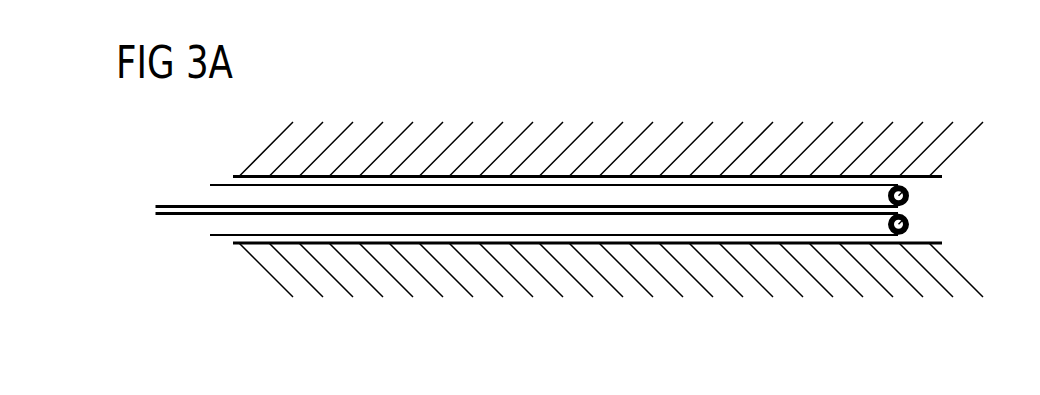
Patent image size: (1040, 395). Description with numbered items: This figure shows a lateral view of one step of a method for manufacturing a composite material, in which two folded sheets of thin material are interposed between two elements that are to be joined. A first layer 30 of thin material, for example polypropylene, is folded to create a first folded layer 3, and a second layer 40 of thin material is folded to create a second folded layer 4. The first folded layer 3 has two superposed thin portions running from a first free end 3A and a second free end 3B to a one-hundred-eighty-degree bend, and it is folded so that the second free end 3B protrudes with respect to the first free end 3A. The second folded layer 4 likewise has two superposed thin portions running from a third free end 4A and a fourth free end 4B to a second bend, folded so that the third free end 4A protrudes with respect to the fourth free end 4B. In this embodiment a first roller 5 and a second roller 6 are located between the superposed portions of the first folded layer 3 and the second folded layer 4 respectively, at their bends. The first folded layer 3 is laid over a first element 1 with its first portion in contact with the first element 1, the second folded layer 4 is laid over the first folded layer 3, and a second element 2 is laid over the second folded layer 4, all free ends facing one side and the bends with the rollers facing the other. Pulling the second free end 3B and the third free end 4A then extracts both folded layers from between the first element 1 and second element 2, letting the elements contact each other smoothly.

The first element 1 is at (915, 272).
The second element 2 is at (636, 157).
The first folded layer 3 is at (467, 262).
The first free end 3A is at (210, 235).
The second free end 3B is at (158, 213).
The first layer 30 is at (202, 213).
The second folded layer 4 is at (477, 164).
The third free end 4A is at (158, 206).
The fourth free end 4B is at (210, 185).
The second layer 40 is at (202, 206).
The first roller 5 is at (909, 224).
The second roller 6 is at (909, 196).